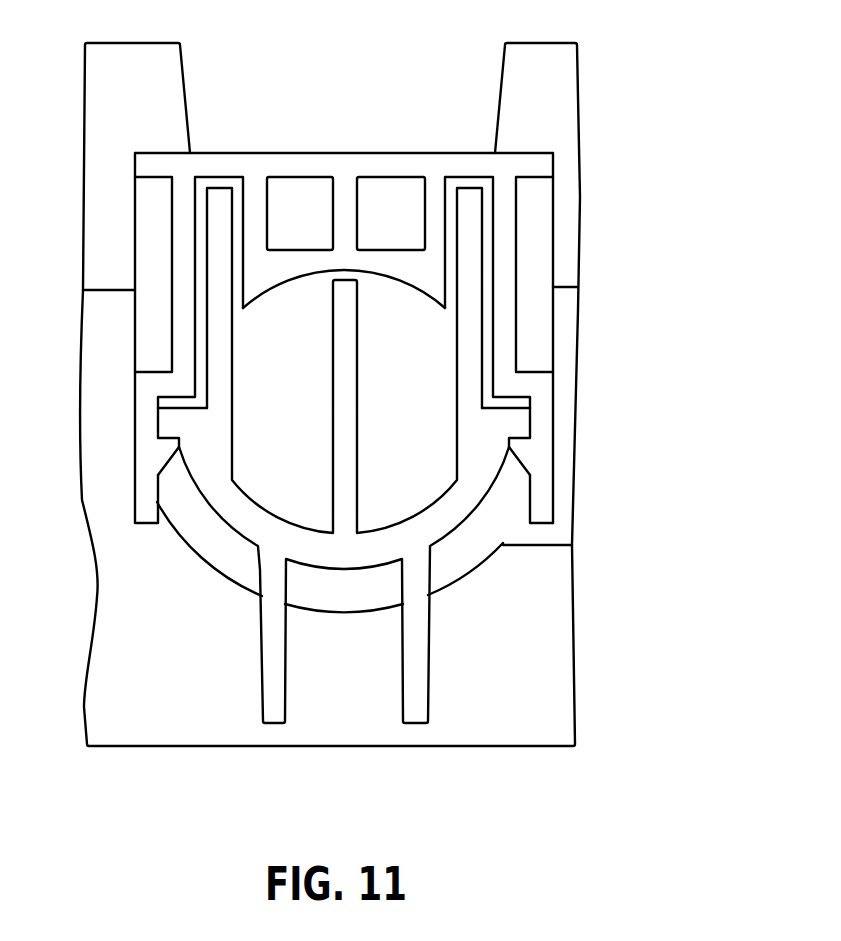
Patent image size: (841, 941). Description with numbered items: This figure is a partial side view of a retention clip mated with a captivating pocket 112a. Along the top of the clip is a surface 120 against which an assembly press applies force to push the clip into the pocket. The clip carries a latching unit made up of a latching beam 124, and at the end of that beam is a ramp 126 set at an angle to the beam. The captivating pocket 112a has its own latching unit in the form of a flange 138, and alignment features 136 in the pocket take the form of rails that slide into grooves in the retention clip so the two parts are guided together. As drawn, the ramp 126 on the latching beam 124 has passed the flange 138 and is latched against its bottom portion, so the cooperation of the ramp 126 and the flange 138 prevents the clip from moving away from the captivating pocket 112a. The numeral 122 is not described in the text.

The surface 120 is at (407, 162).
The recess 122 is at (282, 265).
The latching beam 124 is at (542, 510).
The ramp 126 is at (520, 447).
The alignment features 136 is at (470, 213).
The flange 138 is at (523, 423).
The captivating pocket 112a is at (450, 505).